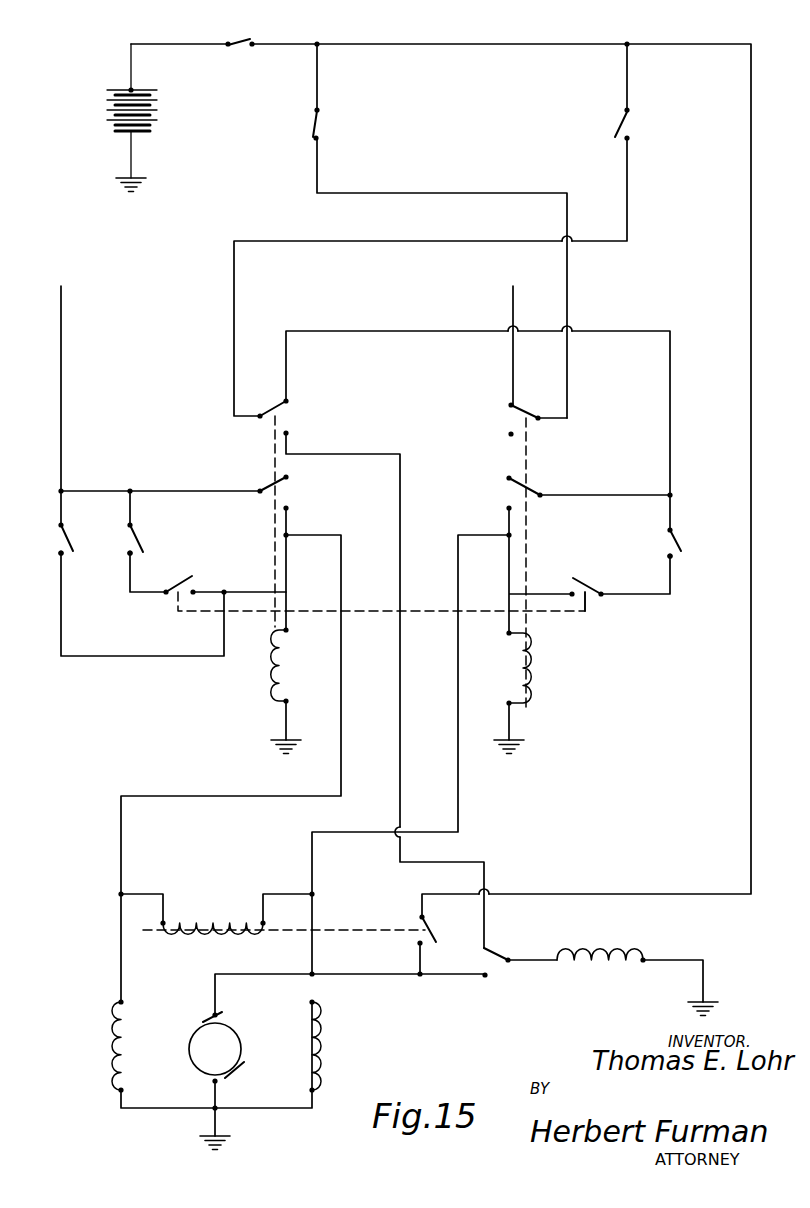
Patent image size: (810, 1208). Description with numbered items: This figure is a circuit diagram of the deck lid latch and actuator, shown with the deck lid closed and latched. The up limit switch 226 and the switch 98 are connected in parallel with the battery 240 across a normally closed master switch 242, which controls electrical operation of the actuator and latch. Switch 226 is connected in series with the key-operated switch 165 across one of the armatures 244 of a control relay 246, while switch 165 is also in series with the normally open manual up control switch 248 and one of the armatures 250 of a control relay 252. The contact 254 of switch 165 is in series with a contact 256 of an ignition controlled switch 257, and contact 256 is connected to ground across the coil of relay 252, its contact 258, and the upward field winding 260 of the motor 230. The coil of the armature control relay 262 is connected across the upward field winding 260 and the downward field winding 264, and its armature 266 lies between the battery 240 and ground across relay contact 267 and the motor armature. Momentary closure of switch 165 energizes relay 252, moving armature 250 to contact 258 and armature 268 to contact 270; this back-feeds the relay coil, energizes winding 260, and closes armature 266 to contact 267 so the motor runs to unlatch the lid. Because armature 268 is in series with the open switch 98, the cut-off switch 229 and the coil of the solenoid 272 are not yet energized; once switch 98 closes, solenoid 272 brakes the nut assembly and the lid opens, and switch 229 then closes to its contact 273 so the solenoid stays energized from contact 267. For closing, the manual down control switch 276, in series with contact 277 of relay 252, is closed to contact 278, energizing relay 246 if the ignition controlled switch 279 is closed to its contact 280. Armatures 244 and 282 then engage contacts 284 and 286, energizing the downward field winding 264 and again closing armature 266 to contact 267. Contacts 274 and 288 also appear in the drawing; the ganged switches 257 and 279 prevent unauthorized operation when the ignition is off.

The master switch 242 is at (247, 39).
The battery 240 is at (150, 131).
The up limit switch 226 is at (317, 125).
The switch 98 is at (621, 125).
The armature of relay 252 268 is at (270, 409).
The contact of relay 252 277 is at (286, 401).
The contact 270 is at (286, 433).
The armature of relay 252 250 is at (273, 484).
The contact of relay 252 258 is at (286, 508).
The switch 165 is at (68, 538).
The manual up control switch 248 is at (136, 537).
The ignition controlled switch 257 is at (179, 583).
The contact of switch 165 254 is at (56, 556).
The contact 274 is at (128, 556).
The contact of ignition controlled switch 257 256 is at (194, 595).
The control relay 252 is at (274, 681).
The armature of control relay 246 244 is at (522, 411).
The contact 284 is at (511, 434).
The armature of control relay 246 282 is at (525, 488).
The contact 286 is at (509, 508).
The manual down control switch 276 is at (677, 540).
The ignition controlled switch 279 is at (583, 584).
The switch contact 278 is at (669, 557).
The contact of ignition controlled switch 279 280 is at (585, 611).
The control relay 246 is at (536, 675).
The armature control relay 262 is at (202, 938).
The relay contact 267 is at (420, 943).
The armature of relay 262 266 is at (432, 934).
The switch arm 288 is at (484, 945).
The cut-off switch 229 is at (498, 954).
The solenoid 272 is at (582, 951).
The contact of switch 229 273 is at (485, 975).
The upward field winding 260 is at (112, 1050).
The motor 230 is at (238, 1030).
The downward field winding 264 is at (324, 1048).